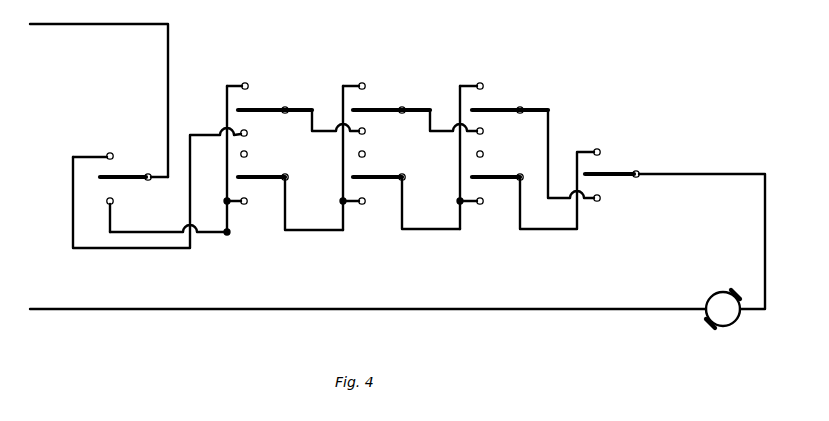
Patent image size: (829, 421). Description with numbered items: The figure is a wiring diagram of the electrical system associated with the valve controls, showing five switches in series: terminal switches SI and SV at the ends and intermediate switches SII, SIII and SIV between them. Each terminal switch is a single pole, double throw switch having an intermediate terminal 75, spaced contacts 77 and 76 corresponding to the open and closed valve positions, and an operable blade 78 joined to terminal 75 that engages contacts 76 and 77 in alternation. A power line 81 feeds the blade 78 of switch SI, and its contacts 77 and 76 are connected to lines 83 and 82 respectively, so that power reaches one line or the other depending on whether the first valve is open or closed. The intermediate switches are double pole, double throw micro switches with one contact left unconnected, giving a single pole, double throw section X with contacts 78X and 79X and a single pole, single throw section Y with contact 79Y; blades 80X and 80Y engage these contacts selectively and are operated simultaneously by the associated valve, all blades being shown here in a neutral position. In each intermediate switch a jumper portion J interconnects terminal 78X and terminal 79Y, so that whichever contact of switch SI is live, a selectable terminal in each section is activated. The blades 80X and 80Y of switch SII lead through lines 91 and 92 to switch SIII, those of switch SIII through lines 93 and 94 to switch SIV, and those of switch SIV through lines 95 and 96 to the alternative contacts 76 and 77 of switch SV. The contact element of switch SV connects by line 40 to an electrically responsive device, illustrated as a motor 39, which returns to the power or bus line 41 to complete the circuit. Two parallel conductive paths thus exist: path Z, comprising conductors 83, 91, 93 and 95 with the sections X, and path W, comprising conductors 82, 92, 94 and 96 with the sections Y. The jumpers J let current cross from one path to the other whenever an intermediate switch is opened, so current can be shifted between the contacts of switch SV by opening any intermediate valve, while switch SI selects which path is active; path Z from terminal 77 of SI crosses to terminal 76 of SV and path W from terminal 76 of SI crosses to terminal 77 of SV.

The power line 81 is at (168, 68).
The line 83 is at (73, 202).
The line 82 is at (143, 232).
The contact 77 is at (107, 154).
The intermediate terminal 75 is at (150, 175).
The blade 78 is at (125, 179).
The contact 76 is at (108, 205).
The contact 78X is at (245, 83).
The blade 80X is at (252, 110).
The contact 79X is at (247, 136).
The blade 80Y is at (252, 177).
The contact 79Y is at (245, 205).
The line 91 is at (316, 136).
The line 92 is at (308, 230).
The line 93 is at (447, 106).
The line 94 is at (420, 229).
The line 95 is at (572, 118).
The line 96 is at (528, 232).
The motor 39 is at (709, 296).
The line 40 is at (696, 174).
The bus line 41 is at (592, 306).
The terminal switch SI is at (128, 140).
The intermediate switch SII is at (268, 68).
The intermediate switch SIII is at (390, 68).
The intermediate switch SIV is at (506, 68).
The terminal switch SV is at (621, 136).
The jumper portion J is at (226, 172).
The single pole, double throw section X is at (248, 126).
The single pole, single throw section Y is at (248, 193).
The conductive path Z is at (315, 107).
The conductive path W is at (313, 238).